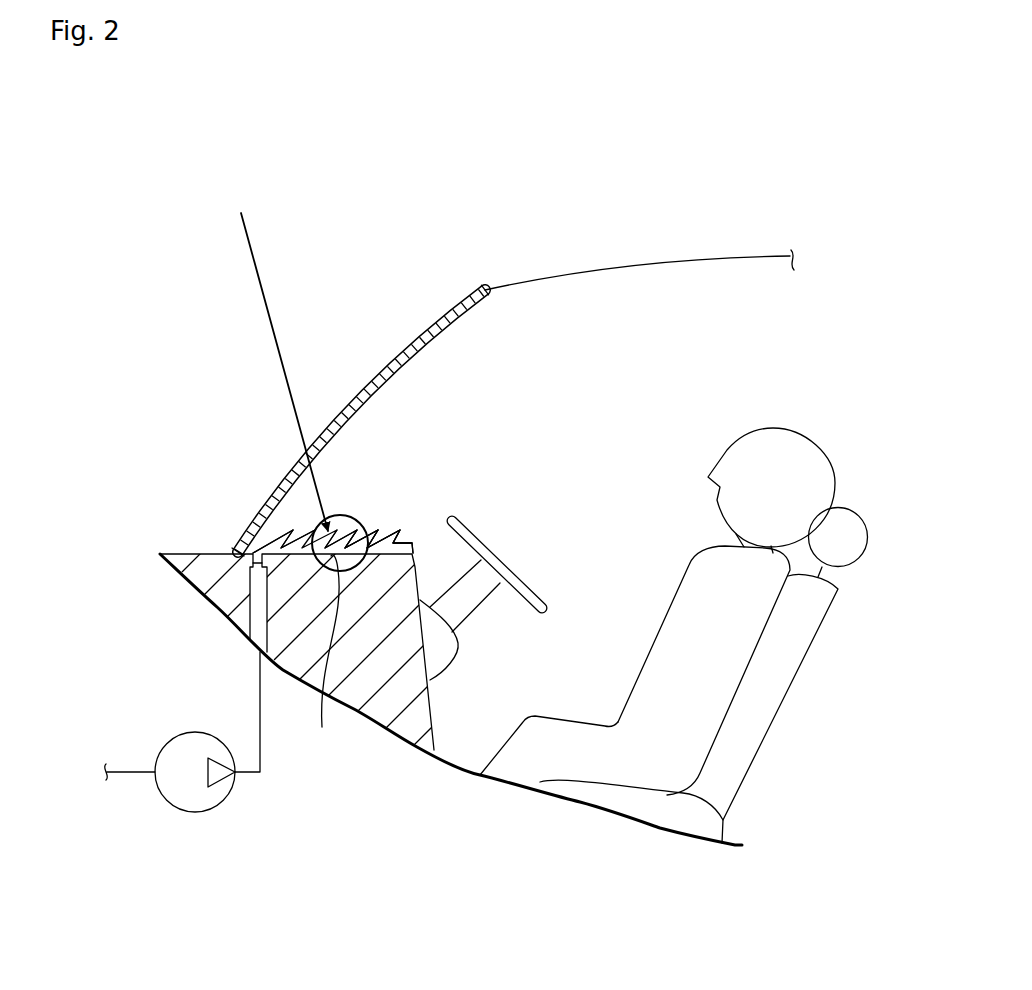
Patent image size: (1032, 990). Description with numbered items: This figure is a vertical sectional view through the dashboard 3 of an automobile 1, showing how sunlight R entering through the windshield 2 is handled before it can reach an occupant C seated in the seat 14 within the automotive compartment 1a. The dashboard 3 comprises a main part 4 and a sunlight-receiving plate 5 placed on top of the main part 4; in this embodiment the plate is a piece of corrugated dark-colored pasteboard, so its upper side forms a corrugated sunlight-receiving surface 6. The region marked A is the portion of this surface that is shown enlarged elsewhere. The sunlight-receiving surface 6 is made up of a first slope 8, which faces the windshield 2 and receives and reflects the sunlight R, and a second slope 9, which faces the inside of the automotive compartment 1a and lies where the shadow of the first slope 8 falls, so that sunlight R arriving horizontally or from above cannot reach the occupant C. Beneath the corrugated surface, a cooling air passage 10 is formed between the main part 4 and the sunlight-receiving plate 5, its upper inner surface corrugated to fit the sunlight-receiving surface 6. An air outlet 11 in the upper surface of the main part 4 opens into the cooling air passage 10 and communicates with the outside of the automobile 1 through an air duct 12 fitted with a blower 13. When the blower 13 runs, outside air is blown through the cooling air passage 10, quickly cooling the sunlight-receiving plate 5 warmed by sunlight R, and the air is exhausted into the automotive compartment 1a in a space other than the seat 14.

The automobile 1 is at (828, 282).
The automotive compartment 1a is at (680, 366).
The windshield 2 is at (402, 350).
The dashboard 3 is at (212, 413).
The main part 4 is at (280, 573).
The sunlight-receiving plate 5 is at (305, 525).
The sunlight-receiving surface 6 is at (458, 440).
The first slope 8 is at (370, 538).
The second slope 9 is at (414, 538).
The cooling air passage 10 is at (330, 659).
The air outlet 11 is at (257, 554).
The air duct 12 is at (260, 750).
The blower 13 is at (188, 808).
The seat 14 is at (795, 662).
The sunlight R is at (252, 262).
The enlarged region A is at (347, 512).
The occupant C is at (683, 589).